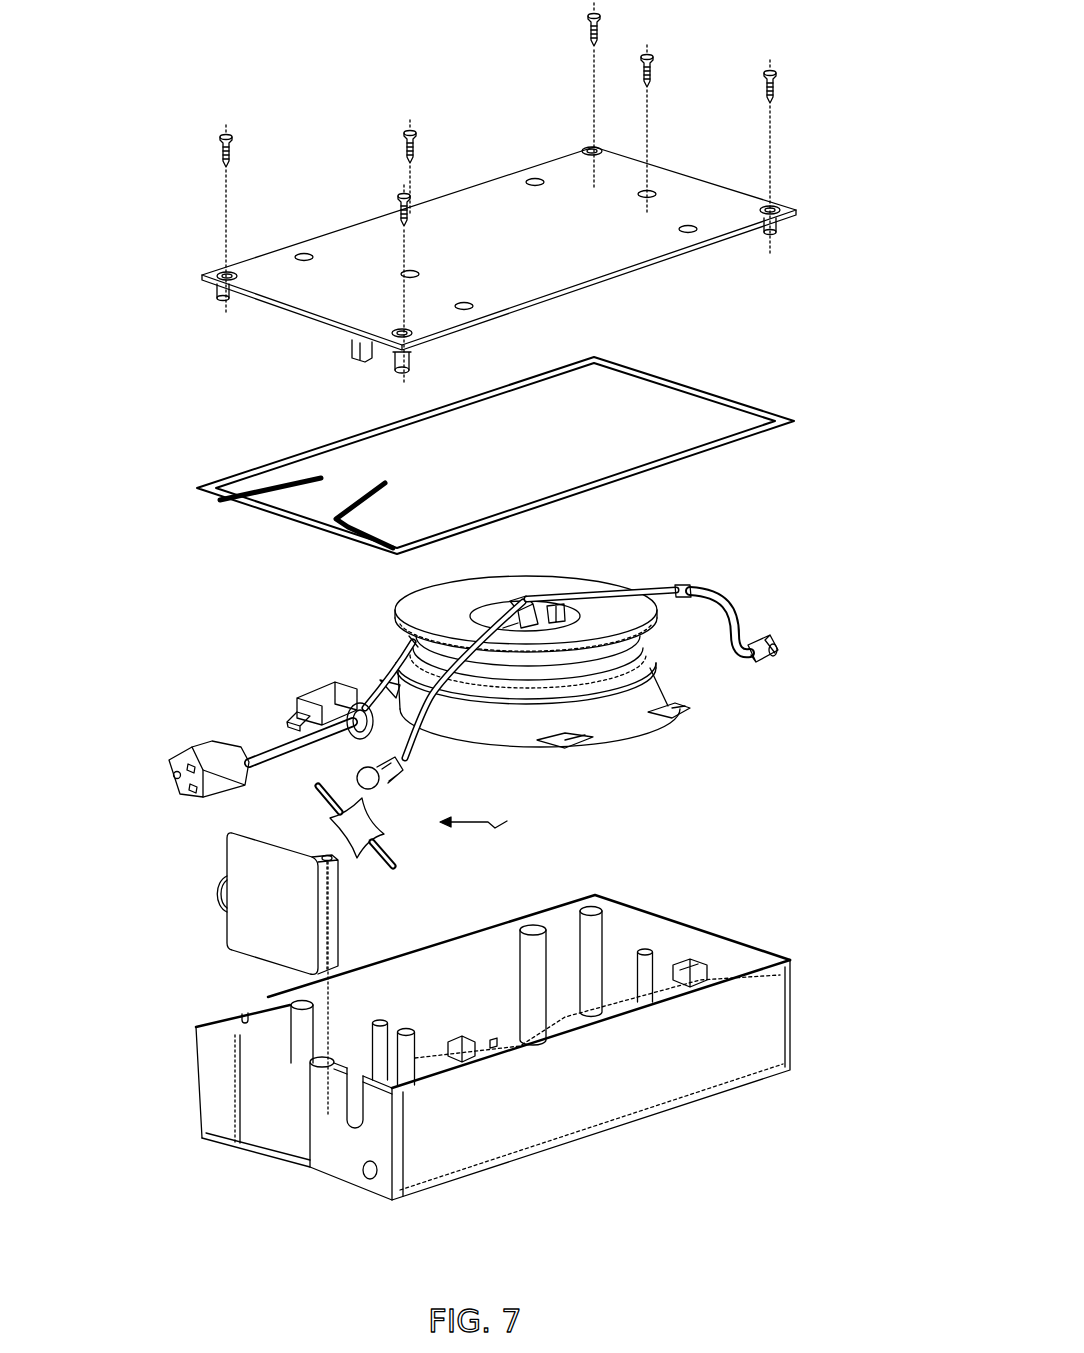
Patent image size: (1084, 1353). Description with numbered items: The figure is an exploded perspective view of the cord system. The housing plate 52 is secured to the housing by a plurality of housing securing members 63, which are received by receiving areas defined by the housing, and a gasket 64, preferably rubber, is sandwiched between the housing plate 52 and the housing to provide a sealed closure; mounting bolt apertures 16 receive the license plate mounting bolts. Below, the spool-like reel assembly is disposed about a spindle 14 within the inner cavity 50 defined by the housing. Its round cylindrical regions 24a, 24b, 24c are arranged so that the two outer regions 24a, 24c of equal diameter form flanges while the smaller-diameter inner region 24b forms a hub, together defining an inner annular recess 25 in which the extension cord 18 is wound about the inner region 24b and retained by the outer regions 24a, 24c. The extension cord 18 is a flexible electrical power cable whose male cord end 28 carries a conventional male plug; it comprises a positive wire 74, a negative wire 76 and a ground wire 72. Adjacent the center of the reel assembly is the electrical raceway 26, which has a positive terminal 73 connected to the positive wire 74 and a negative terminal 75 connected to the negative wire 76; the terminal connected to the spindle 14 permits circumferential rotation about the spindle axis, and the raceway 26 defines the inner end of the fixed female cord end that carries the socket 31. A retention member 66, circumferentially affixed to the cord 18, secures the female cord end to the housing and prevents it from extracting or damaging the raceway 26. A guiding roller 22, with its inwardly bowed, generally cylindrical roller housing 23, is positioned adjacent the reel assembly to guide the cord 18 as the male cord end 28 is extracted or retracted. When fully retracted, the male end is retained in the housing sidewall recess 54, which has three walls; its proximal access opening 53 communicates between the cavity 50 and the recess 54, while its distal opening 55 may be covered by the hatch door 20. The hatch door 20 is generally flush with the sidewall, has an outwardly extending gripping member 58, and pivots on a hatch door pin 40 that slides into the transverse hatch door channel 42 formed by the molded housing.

The housing securing members 63 is at (778, 73).
The housing plate 52 is at (639, 247).
The gasket 64 is at (707, 454).
The inner annular recess 25 is at (395, 618).
The extension cord 18 is at (405, 645).
The retention member 66 is at (487, 667).
The male cord end 28 is at (398, 670).
The spindle 14 is at (567, 628).
The positive terminal 73 is at (523, 603).
The electrical raceway 26 is at (663, 592).
The negative terminal 75 is at (775, 637).
The roller housing 23 is at (357, 820).
The hatch door pin 40 is at (393, 867).
The guiding roller 22 is at (487, 821).
The positive wire 74 is at (323, 695).
The ground wire 72 is at (287, 723).
The negative wire 76 is at (346, 722).
The socket 31 is at (172, 788).
The outer region 24a is at (653, 603).
The inner region 24b is at (653, 640).
The outer region 24c is at (677, 707).
The hatch door 20 is at (263, 920).
The gripping member 58 is at (218, 890).
The inner cavity 50 is at (610, 1023).
The hatch door channel 42 is at (334, 1060).
The access opening 53 is at (357, 1010).
The housing sidewall recess 54 is at (274, 1083).
The distal opening 55 is at (287, 1130).
The mounting bolt apertures 16 is at (297, 997).